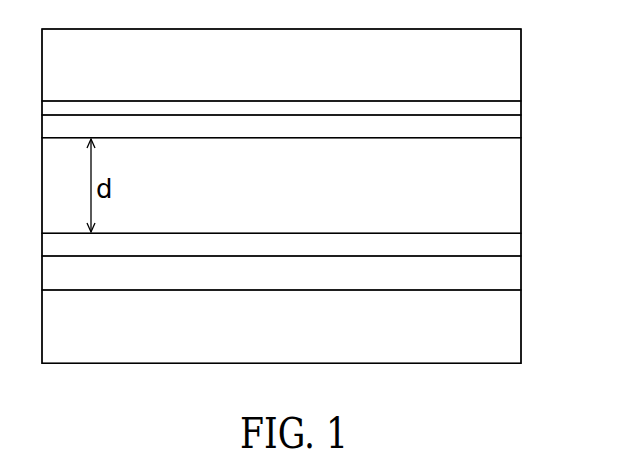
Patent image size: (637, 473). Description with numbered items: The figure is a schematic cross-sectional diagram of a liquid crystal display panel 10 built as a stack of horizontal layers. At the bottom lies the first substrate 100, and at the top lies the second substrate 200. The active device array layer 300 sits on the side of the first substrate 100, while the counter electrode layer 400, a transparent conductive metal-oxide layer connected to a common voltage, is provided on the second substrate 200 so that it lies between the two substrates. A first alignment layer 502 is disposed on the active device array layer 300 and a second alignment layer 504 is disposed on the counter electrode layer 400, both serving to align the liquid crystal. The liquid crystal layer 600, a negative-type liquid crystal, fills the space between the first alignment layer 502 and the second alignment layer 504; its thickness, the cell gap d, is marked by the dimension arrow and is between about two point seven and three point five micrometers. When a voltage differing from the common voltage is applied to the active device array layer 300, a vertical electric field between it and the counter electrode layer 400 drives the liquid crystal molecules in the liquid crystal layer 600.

The liquid crystal display panel 10 is at (518, 404).
The first substrate 100 is at (515, 324).
The second substrate 200 is at (515, 63).
The active device array layer 300 is at (515, 273).
The counter electrode layer 400 is at (515, 109).
The first alignment layer 502 is at (515, 246).
The second alignment layer 504 is at (515, 127).
The liquid crystal layer 600 is at (515, 192).